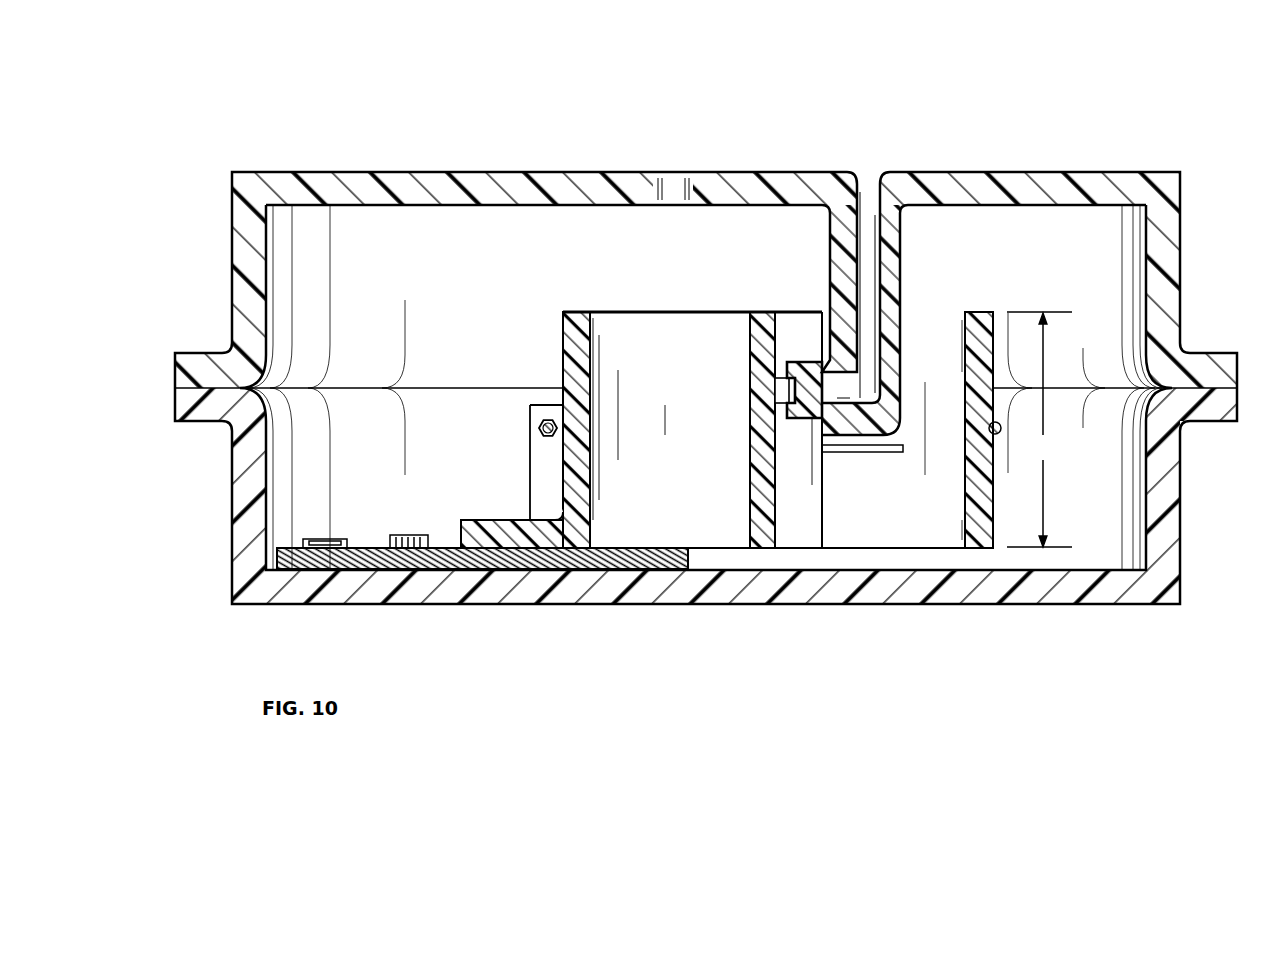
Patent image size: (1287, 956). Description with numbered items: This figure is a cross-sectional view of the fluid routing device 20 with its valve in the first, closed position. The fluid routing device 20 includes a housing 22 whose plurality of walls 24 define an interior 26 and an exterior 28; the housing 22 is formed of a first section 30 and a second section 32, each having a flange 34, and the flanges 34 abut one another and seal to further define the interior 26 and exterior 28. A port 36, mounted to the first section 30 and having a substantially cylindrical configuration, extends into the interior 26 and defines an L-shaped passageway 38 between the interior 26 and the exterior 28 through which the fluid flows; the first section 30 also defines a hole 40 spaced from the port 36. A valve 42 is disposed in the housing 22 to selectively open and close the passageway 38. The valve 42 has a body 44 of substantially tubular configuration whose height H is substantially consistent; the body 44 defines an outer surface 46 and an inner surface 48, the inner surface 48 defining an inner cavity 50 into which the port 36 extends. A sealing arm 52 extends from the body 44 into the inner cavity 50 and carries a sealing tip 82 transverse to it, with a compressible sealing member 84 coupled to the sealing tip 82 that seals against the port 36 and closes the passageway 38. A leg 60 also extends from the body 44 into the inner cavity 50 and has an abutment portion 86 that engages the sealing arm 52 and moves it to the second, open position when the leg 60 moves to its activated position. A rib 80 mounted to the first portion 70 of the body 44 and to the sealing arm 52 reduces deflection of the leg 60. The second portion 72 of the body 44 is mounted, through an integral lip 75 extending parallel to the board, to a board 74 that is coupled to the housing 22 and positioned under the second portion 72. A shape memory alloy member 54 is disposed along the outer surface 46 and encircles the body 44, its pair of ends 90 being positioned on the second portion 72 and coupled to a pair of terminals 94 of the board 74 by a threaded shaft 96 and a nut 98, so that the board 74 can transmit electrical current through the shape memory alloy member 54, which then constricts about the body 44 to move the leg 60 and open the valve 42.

The fluid routing device 20 is at (705, 340).
The housing 22 is at (705, 375).
The walls 24 is at (405, 190).
The interior 26 is at (365, 294).
The exterior 28 is at (705, 356).
The first section 30 is at (520, 187).
The second section 32 is at (370, 592).
The flange 34 is at (180, 368).
The port 36 is at (903, 257).
The passageway 38 is at (860, 188).
The hole 40 is at (696, 178).
The valve 42 is at (659, 398).
The body 44 is at (985, 313).
The outer surface 46 is at (579, 407).
The inner surface 48 is at (592, 348).
The inner cavity 50 is at (592, 330).
The sealing arm 52 is at (750, 362).
The shape memory alloy member 54 is at (1001, 430).
The leg 60 is at (824, 485).
The first portion 70 is at (978, 312).
The second portion 72 is at (577, 485).
The board 74 is at (372, 545).
The lip 75 is at (470, 528).
The rib 80 is at (860, 450).
The sealing tip 82 is at (806, 418).
The sealing member 84 is at (802, 377).
The abutment portion 86 is at (797, 515).
The ends 90 is at (510, 427).
The terminals 94 is at (530, 458).
The threaded shaft 96 is at (549, 440).
The nut 98 is at (552, 420).